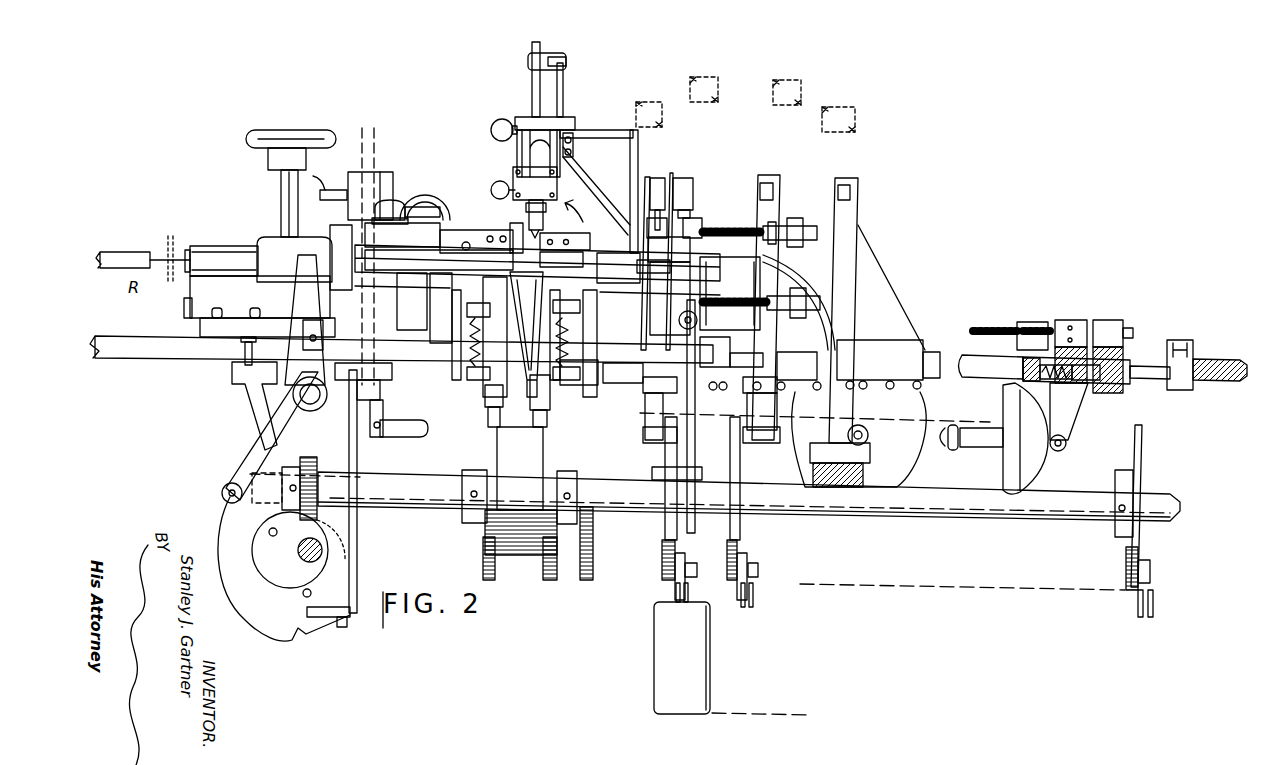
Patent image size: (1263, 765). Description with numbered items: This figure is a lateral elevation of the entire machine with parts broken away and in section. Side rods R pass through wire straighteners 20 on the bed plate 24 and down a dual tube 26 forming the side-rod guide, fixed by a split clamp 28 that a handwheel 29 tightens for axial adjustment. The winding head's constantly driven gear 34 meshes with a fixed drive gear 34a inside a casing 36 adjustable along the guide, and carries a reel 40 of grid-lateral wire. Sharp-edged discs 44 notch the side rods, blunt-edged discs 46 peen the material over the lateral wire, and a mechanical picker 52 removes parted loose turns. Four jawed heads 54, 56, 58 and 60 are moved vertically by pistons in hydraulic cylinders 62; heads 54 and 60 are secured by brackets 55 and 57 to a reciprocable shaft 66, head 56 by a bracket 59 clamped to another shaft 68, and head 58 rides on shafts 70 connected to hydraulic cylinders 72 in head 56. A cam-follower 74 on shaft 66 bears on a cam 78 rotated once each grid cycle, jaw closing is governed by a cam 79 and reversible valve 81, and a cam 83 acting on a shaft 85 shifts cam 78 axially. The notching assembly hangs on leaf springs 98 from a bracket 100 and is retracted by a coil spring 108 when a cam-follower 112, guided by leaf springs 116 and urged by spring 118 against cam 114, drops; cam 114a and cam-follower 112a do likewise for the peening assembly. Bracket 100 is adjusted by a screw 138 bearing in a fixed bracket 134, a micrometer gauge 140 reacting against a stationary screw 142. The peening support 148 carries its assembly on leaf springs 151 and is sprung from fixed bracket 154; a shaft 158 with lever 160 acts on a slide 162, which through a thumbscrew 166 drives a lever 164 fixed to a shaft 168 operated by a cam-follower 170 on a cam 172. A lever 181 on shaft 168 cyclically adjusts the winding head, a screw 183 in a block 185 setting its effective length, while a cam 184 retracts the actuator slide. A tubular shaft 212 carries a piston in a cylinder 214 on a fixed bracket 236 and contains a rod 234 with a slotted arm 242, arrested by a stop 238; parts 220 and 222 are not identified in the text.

The wire straighteners 20 is at (150, 235).
The bed plate 24 is at (150, 350).
The dual tube 26 is at (212, 250).
The split clamp 28 is at (294, 238).
The handwheel 29 is at (268, 133).
The constantly driven gear 34 is at (364, 168).
The fixed drive gear 34a is at (383, 373).
The casing 36 is at (393, 172).
The reel of grid-lateral wire 40 is at (444, 200).
The sharp-edged discs 44 is at (506, 233).
The blunt-edged discs 46 is at (534, 238).
The mechanical picker 52 is at (587, 214).
The head 54 is at (653, 177).
The bracket 55 is at (724, 358).
The head 56 is at (688, 173).
The bracket 57 is at (880, 353).
The head 58 is at (768, 177).
The bracket 59 is at (814, 350).
The head 60 is at (843, 178).
The hydraulic cylinders 62 is at (652, 410).
The longitudinally reciprocable shaft 66 is at (623, 382).
The longitudinally reciprocable shaft 68 is at (596, 385).
The shafts 70 is at (725, 230).
The hydraulic cylinders 72 is at (700, 220).
The cam-follower 74 is at (1067, 445).
The cam 78 is at (1030, 455).
The cam 79 is at (728, 533).
The reversible valve 81 is at (700, 646).
The cam 83 is at (872, 435).
The shaft 85 is at (978, 428).
The leaf springs 98 is at (482, 336).
The bracket 100 is at (468, 232).
The coil spring 108 is at (439, 256).
The cam-follower 112 is at (486, 390).
The cam-follower 112a is at (533, 393).
The cam 114 is at (486, 421).
The cam 114a is at (541, 582).
The leaf springs 116 is at (446, 328).
The tensioned coil spring 118 is at (470, 322).
The bracket 134 is at (412, 301).
The screw 138 is at (368, 240).
The micrometer gauge 140 is at (399, 203).
The adjustable stationary screw 142 is at (449, 215).
The support 148 is at (573, 336).
The leaf springs 151 is at (561, 260).
The fixed bracket 154 is at (678, 295).
The shaft 158 is at (674, 319).
The lever 160 is at (700, 290).
The slide 162 is at (663, 255).
The lever 164 is at (275, 255).
The adjustable thumbscrew 166 is at (332, 200).
The shaft 168 is at (292, 400).
The cam-follower 170 is at (250, 452).
The cam 172 is at (232, 548).
The lever 181 is at (300, 300).
The screw 183 is at (308, 384).
The cam 184 is at (596, 570).
The block 185 is at (300, 333).
The tubular shaft 212 is at (531, 93).
The cylinder 214 is at (548, 164).
The ring 220 is at (497, 122).
The ring 222 is at (497, 177).
The rod 234 is at (532, 47).
The fixed bracket 236 is at (612, 119).
The stop 238 is at (560, 60).
The arm 242 is at (528, 64).